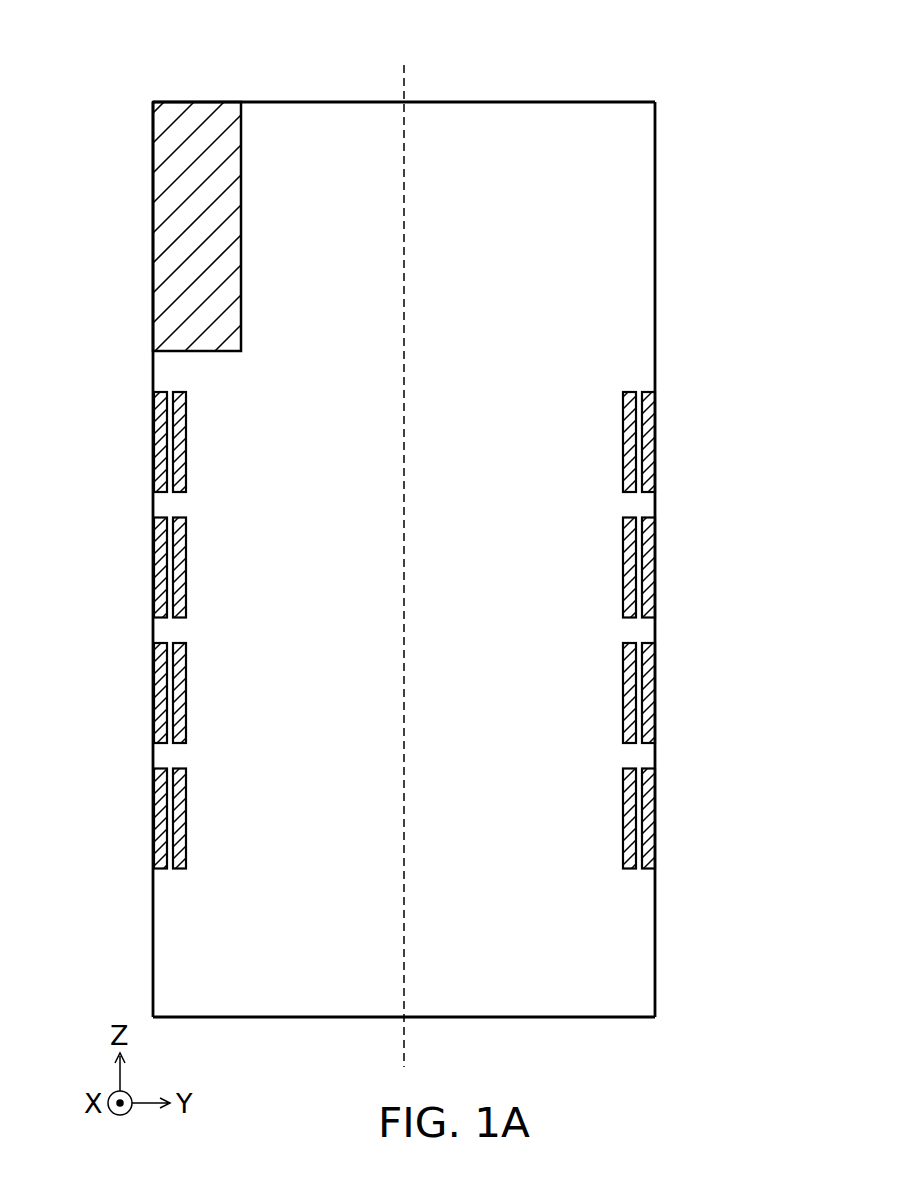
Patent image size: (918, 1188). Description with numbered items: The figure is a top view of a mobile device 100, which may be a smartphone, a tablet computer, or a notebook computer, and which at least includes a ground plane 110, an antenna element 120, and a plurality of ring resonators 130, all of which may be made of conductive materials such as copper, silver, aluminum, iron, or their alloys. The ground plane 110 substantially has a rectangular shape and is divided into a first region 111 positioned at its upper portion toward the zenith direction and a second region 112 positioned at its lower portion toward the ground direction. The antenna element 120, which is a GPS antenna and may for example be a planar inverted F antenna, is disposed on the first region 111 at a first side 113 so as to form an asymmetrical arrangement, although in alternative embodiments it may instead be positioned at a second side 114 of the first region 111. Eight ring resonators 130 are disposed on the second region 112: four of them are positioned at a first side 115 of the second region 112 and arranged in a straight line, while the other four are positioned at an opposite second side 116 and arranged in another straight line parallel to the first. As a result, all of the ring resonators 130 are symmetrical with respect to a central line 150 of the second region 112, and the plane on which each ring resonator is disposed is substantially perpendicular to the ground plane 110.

The mobile device 100 is at (138, 58).
The ground plane 110 is at (775, 950).
The first region 111 is at (545, 290).
The second region 112 is at (545, 937).
The first side 113 is at (153, 278).
The second side 114 is at (655, 222).
The first side 115 is at (153, 955).
The second side 116 is at (655, 983).
The antenna element 120 is at (162, 212).
The ring resonators 130 is at (153, 443).
The central line 150 is at (407, 78).